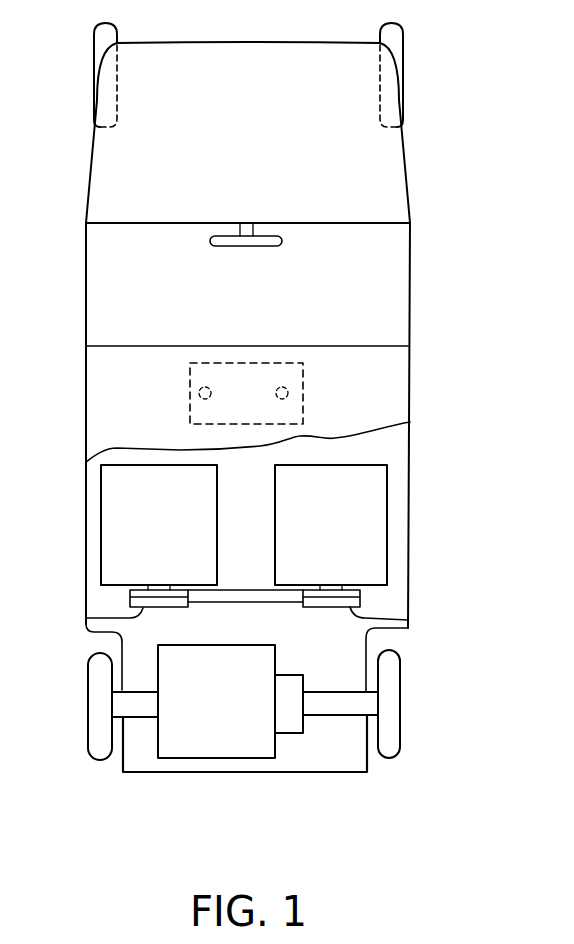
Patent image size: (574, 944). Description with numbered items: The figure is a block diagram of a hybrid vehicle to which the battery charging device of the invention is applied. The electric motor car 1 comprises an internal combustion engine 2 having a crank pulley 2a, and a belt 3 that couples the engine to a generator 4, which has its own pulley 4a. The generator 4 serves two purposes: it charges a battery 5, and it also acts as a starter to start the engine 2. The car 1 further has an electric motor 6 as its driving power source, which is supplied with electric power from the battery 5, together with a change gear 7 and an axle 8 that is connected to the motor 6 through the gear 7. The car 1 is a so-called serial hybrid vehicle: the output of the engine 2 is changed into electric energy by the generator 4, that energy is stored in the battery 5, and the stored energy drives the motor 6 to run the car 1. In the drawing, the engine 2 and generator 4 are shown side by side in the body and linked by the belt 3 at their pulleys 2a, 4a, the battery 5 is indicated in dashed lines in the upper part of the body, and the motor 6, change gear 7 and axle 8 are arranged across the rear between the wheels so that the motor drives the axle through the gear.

The electric motor car 1 is at (433, 210).
The internal combustion engine 2 is at (370, 523).
The crank pulley 2a is at (408, 620).
The belt 3 is at (246, 592).
The generator 4 is at (117, 505).
The pulley of the generator 4a is at (86, 618).
The battery 5 is at (303, 395).
The electric motor 6 is at (220, 757).
The change gear 7 is at (287, 733).
The axle shaft 8 is at (333, 715).